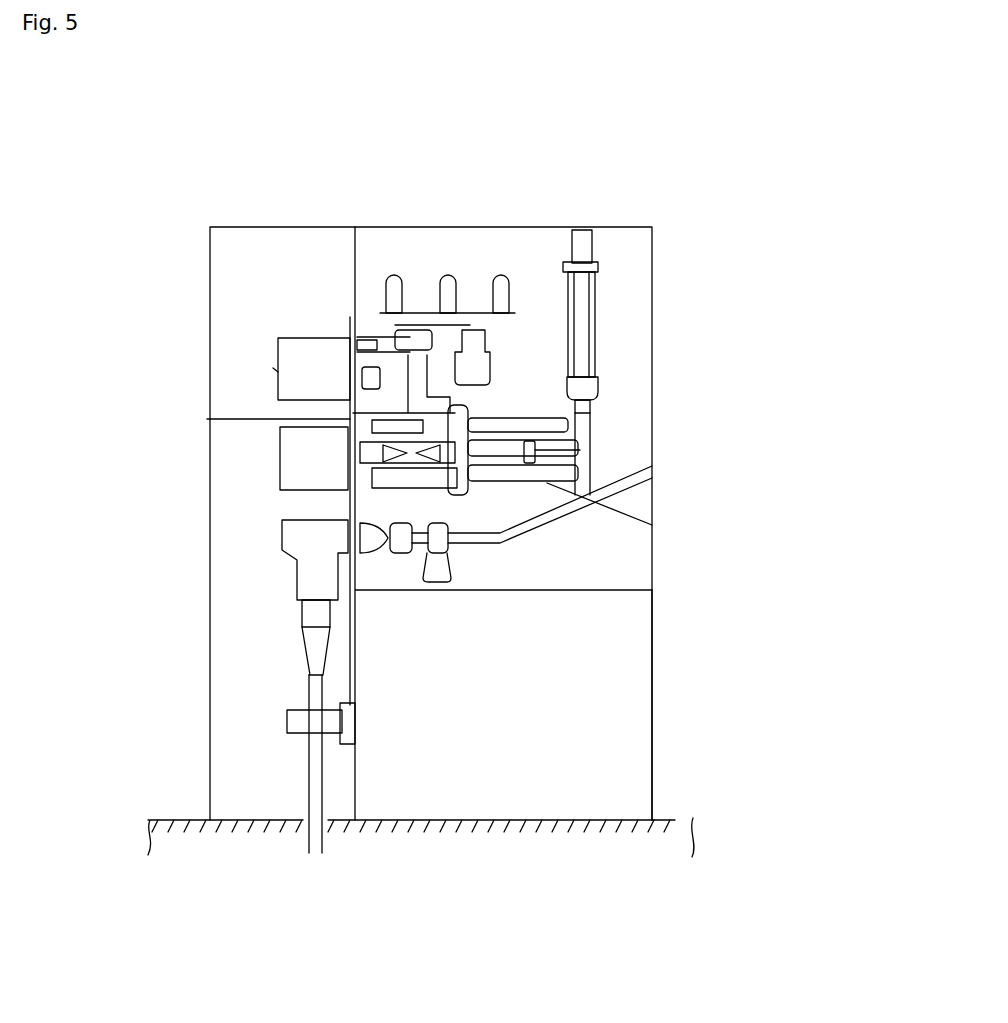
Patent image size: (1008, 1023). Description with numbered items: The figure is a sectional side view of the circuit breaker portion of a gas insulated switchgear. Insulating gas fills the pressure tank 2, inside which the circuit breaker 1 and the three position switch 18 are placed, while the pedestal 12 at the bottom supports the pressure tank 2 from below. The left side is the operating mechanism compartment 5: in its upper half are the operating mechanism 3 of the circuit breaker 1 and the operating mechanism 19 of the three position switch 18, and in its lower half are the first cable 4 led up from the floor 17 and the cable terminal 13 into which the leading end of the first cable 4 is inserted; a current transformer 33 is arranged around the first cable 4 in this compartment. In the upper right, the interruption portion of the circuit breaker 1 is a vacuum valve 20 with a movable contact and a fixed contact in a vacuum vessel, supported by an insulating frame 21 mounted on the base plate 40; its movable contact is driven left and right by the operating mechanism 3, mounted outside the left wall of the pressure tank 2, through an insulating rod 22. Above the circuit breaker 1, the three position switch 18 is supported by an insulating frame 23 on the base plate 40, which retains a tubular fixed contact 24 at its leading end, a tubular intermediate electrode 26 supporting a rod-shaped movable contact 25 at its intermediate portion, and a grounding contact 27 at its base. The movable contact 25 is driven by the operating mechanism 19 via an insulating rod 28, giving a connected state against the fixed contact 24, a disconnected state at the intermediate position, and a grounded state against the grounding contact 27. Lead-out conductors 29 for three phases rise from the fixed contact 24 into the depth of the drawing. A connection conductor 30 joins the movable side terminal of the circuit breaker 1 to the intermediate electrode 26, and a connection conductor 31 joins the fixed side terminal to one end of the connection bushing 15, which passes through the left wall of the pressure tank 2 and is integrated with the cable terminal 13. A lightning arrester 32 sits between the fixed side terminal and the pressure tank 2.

The circuit breaker 1 is at (207, 419).
The pressure tank 2 is at (638, 227).
The operating mechanism 3 is at (277, 457).
The first cable 4 is at (307, 778).
The operating mechanism compartment 5 is at (282, 227).
The pedestal 12 is at (653, 760).
The cable terminal 13 is at (313, 570).
The connection bushing 15 is at (368, 520).
The floor 17 is at (675, 820).
The three position switch 18 is at (380, 360).
The operating mechanism 19 is at (277, 368).
The vacuum valve 20 is at (560, 452).
The insulating frame 21 is at (652, 525).
The insulating rod 22 is at (347, 468).
The insulating frame 23 is at (452, 357).
The tubular fixed contact 24 is at (480, 370).
The rod-shaped movable contact 25 is at (412, 350).
The tubular intermediate electrode 26 is at (393, 343).
The grounding contact 27 is at (397, 350).
The insulating rod 28 is at (273, 368).
The lead-out conductors 29 is at (497, 262).
The connection conductor 30 is at (455, 407).
The connection conductor 31 is at (520, 533).
The lightning arrester 32 is at (593, 325).
The current transformer 33 is at (287, 722).
The base plate 40 is at (353, 506).